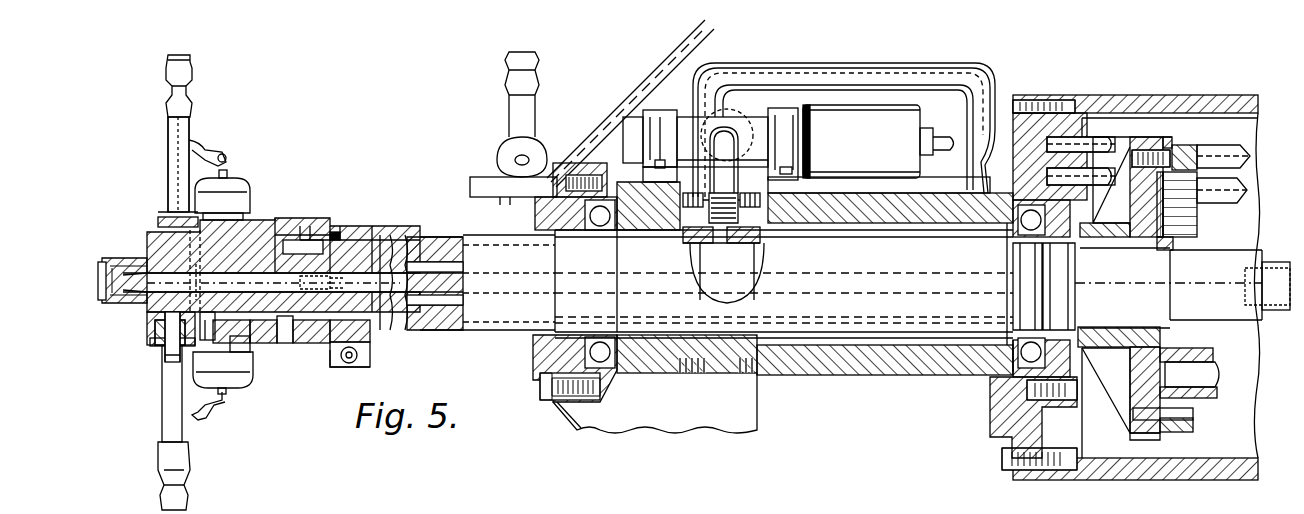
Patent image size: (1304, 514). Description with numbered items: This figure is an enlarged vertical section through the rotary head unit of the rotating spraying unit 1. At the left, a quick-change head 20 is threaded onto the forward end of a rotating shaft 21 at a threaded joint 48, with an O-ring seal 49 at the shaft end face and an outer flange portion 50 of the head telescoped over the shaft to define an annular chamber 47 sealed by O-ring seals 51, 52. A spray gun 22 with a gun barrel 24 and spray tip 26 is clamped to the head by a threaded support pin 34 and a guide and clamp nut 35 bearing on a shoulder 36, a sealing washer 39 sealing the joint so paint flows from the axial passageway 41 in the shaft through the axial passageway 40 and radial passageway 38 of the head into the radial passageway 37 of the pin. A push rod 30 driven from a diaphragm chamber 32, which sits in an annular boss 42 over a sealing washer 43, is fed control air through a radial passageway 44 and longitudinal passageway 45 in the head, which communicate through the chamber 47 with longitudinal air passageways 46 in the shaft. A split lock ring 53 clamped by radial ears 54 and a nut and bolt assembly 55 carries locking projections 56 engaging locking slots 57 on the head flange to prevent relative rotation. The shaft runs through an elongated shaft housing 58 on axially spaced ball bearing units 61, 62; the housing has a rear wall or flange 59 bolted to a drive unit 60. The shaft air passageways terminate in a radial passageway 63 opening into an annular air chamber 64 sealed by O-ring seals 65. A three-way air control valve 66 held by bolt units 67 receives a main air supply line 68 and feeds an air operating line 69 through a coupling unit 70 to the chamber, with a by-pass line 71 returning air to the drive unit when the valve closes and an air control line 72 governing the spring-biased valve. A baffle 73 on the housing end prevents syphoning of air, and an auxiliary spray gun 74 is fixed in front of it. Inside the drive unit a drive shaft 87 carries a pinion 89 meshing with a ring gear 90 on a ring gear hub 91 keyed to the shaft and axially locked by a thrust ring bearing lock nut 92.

The rotating spraying unit 1 is at (113, 193).
The quick-change head 20 is at (250, 220).
The rotating shaft 21 is at (382, 330).
The spray gun 22 is at (192, 132).
The gun barrel 24 is at (168, 163).
The spray tip 26 is at (184, 54).
The push rod 30 is at (225, 165).
The diaphragm chamber 32 is at (245, 185).
The threaded support pin 34 is at (150, 330).
The guide and clamp nut 35 is at (155, 345).
The shoulder 36 is at (155, 338).
The radial passageway 37 is at (165, 362).
The radial passageway 38 is at (176, 282).
The sealing washer 39 is at (196, 286).
The axial passageway 40 is at (140, 260).
The axial passageway 41 is at (355, 235).
The annular boss 42 is at (243, 368).
The sealing washer 43 is at (250, 340).
The radial passageway 44 is at (212, 340).
The longitudinal passageway 45 is at (270, 340).
The longitudinal air passageways 46 is at (370, 340).
The annular chamber 47 is at (297, 342).
The threaded joint 48 is at (285, 235).
The O-ring seal 49 is at (190, 262).
The outer flange portion 50 is at (283, 225).
The O-ring seal 51 is at (262, 275).
The O-ring seal 52 is at (313, 235).
The split lock ring 53 is at (385, 230).
The radial ears 54 is at (340, 367).
The nut and bolt assembly 55 is at (357, 362).
The locking projections 56 is at (330, 281).
The locking slots 57 is at (300, 281).
The shaft housing 58 is at (875, 375).
The rear wall or flange 59 is at (1013, 425).
The drive unit 60 is at (1190, 480).
The ball bearing unit 61 is at (622, 375).
The ball bearing unit 62 is at (1013, 372).
The radial passageway 63 is at (683, 250).
The annular air chamber 64 is at (780, 250).
The O-ring seals 65 is at (708, 205).
The three-way air control valve 66 is at (685, 110).
The bolt units 67 is at (655, 165).
The main air supply line 68 is at (887, 98).
The air operating line 69 is at (712, 173).
The coupling unit 70 is at (728, 182).
The by-pass line 71 is at (855, 65).
The air control line 72 is at (935, 152).
The baffle 73 is at (660, 60).
The auxiliary spray gun 74 is at (507, 110).
The drive shaft 87 is at (1225, 372).
The pinion 89 is at (1200, 405).
The ring gear 90 is at (1197, 425).
The ring gear hub 91 is at (1148, 430).
The thrust ring bearing lock nut 92 is at (1176, 244).